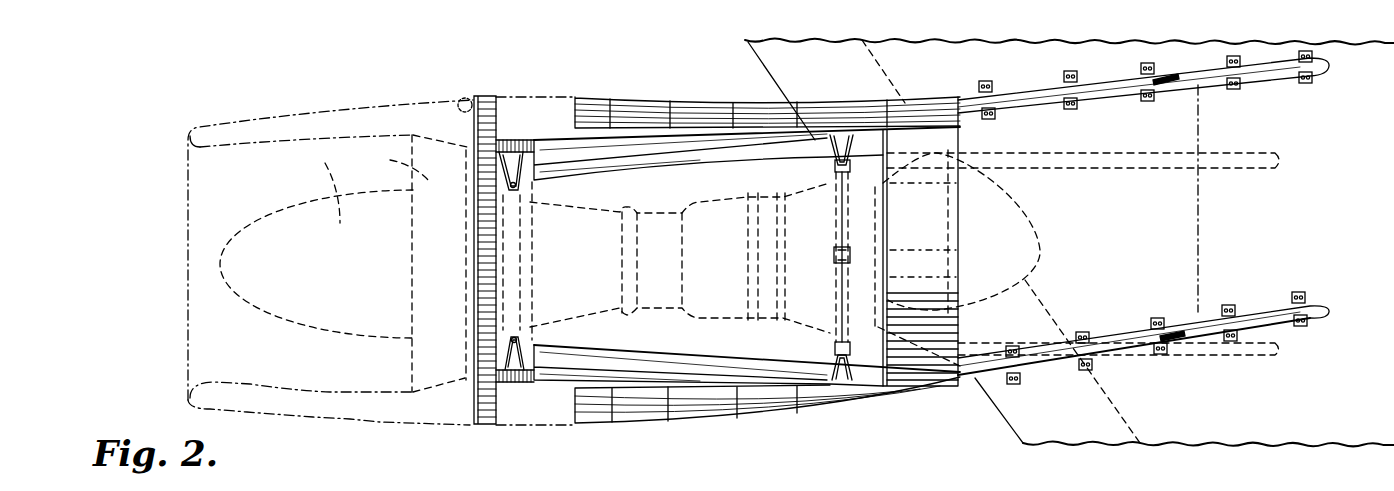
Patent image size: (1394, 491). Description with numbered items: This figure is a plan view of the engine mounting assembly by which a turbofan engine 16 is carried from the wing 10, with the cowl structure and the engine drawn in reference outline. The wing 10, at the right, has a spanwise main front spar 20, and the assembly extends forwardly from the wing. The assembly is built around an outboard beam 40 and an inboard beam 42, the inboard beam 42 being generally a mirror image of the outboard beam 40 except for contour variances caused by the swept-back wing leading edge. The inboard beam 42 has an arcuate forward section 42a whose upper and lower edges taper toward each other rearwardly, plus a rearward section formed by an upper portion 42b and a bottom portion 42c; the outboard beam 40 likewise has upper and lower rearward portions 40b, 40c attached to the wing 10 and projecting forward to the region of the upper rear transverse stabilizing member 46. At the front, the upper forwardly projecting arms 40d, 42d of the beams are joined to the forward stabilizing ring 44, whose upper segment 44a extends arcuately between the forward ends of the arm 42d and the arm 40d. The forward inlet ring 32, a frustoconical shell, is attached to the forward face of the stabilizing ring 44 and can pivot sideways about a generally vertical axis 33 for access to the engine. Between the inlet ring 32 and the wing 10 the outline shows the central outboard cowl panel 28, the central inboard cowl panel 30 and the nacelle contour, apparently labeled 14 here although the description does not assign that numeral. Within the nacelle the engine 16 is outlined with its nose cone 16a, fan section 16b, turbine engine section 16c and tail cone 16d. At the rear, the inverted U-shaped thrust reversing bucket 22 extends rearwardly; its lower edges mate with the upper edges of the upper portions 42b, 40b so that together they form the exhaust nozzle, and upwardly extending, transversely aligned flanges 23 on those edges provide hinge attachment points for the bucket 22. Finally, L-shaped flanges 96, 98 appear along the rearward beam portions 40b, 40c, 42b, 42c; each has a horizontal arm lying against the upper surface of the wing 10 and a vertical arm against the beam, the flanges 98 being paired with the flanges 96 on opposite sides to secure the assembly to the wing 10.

The wing 10 is at (1313, 425).
The nacelle cowl 14 is at (388, 422).
The turbofan engine 16 is at (280, 215).
The nose cone 16a is at (314, 183).
The fan section 16b is at (391, 162).
The turbine engine section 16c is at (745, 197).
The tail cone 16d is at (1022, 220).
The main front spar 20 is at (1118, 408).
The thrust reversing bucket 22 is at (1208, 215).
The flanges 23 is at (1160, 84).
The central outboard cowl panel 28 is at (522, 403).
The central inboard cowl panel 30 is at (522, 93).
The forward inlet ring 32 is at (190, 133).
The vertical axis 33 is at (461, 99).
The outboard beam 40 is at (660, 418).
The upper portion of rearward section of outboard beam 40b is at (1250, 306).
The lower portion of rearward section of outboard beam 40c is at (1197, 355).
The upper forwardly projecting arm of outboard beam 40d is at (503, 378).
The inboard beam 42 is at (630, 122).
The forward section of inboard beam 42a is at (690, 117).
The upper portion of rearward section of inboard beam 42b is at (1320, 75).
The lower portion of rearward section of inboard beam 42c is at (1220, 157).
The upper forwardly projecting arm of inboard beam 42d is at (502, 143).
The forward stabilizing ring 44 is at (483, 425).
The upper segment of forward stabilizing ring 44a is at (485, 236).
The upper rear transverse stabilizing member 46 is at (932, 238).
The L-shaped flanges 96 is at (1142, 66).
The L-shaped flanges 98 is at (1147, 325).